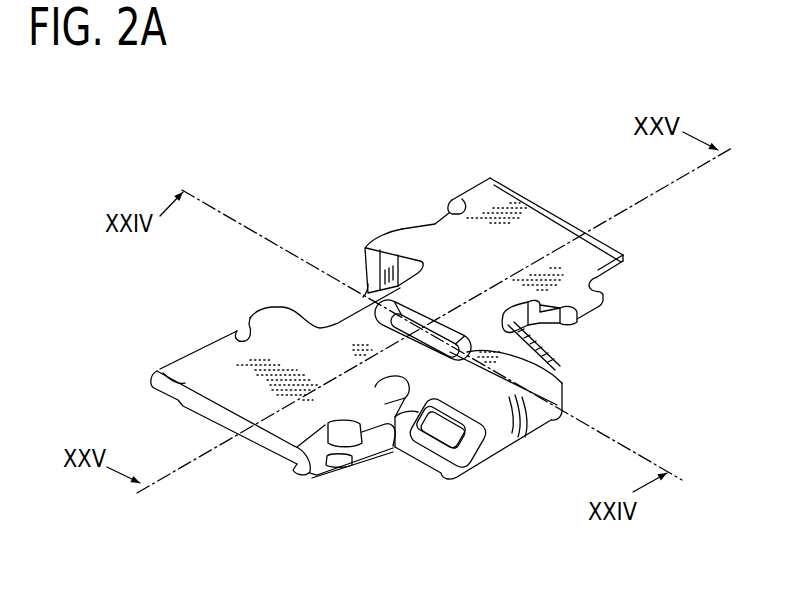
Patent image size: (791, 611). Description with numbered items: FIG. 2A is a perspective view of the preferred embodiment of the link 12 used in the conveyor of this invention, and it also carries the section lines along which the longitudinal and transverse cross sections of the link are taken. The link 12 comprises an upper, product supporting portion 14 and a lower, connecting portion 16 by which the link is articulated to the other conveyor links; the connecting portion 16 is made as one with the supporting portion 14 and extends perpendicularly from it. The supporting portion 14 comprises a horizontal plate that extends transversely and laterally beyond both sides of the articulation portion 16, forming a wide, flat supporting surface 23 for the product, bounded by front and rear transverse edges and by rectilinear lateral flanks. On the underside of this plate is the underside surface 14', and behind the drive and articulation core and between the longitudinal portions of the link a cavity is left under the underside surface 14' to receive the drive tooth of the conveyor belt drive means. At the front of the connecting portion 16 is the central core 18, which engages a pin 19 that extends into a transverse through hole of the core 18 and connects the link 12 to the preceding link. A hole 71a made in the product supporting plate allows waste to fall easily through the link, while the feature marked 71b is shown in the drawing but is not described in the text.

The link 12 is at (512, 166).
The product supporting portion 14 is at (512, 180).
The underside surface 14' is at (372, 224).
The connecting portion 16 is at (335, 513).
The core 18 is at (508, 462).
The pin 19 is at (427, 447).
The supporting surface 23 is at (203, 367).
The hole 71a is at (384, 306).
The second slot 71b is at (563, 375).